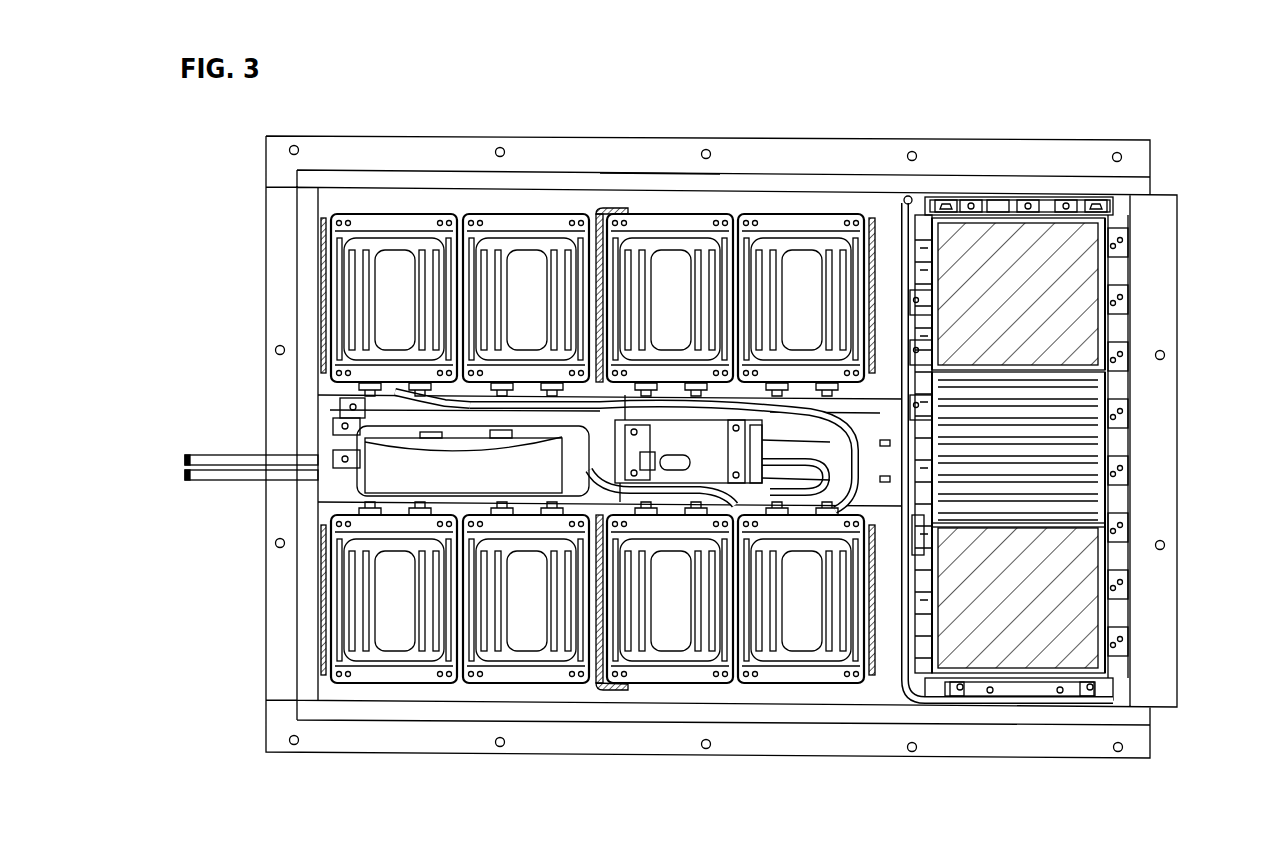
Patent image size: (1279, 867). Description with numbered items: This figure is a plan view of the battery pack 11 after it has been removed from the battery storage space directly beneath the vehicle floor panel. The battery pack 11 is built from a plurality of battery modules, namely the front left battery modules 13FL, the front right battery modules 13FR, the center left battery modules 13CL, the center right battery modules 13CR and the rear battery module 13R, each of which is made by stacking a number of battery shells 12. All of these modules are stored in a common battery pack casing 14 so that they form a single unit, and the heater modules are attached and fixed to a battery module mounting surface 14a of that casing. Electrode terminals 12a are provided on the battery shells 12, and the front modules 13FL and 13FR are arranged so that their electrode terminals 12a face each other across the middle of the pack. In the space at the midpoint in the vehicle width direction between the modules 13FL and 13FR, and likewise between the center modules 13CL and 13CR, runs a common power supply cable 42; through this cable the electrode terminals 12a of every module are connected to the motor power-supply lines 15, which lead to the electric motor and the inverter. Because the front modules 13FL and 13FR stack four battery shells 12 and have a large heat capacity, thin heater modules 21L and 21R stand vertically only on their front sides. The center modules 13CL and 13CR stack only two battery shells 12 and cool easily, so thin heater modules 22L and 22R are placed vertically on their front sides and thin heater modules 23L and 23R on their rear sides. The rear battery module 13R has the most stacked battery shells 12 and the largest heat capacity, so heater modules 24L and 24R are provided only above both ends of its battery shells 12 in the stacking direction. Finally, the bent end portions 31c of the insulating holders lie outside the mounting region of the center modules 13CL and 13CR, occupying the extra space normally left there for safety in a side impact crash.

The battery pack 11 is at (1115, 136).
The battery shell 12 is at (382, 285).
The electrode terminal 12a is at (419, 392).
The front right battery module 13FR is at (396, 210).
The center right battery module 13CR is at (676, 210).
The rear battery module 13R is at (978, 204).
The front left battery module 13FL is at (396, 688).
The center left battery module 13CL is at (686, 688).
The battery pack casing 14 is at (1047, 140).
The battery module mounting surface 14a is at (657, 204).
The motor power-supply line 15 is at (228, 469).
The heater module 21R is at (323, 218).
The heater module 21L is at (323, 675).
The heater module 22R is at (598, 210).
The heater module 22L is at (597, 688).
The heater module 23R is at (871, 218).
The heater module 23L is at (872, 680).
The heater module 24R is at (1063, 270).
The heater module 24L is at (1063, 624).
The bent end portion 31c is at (627, 208).
The power supply cable 42 is at (343, 437).